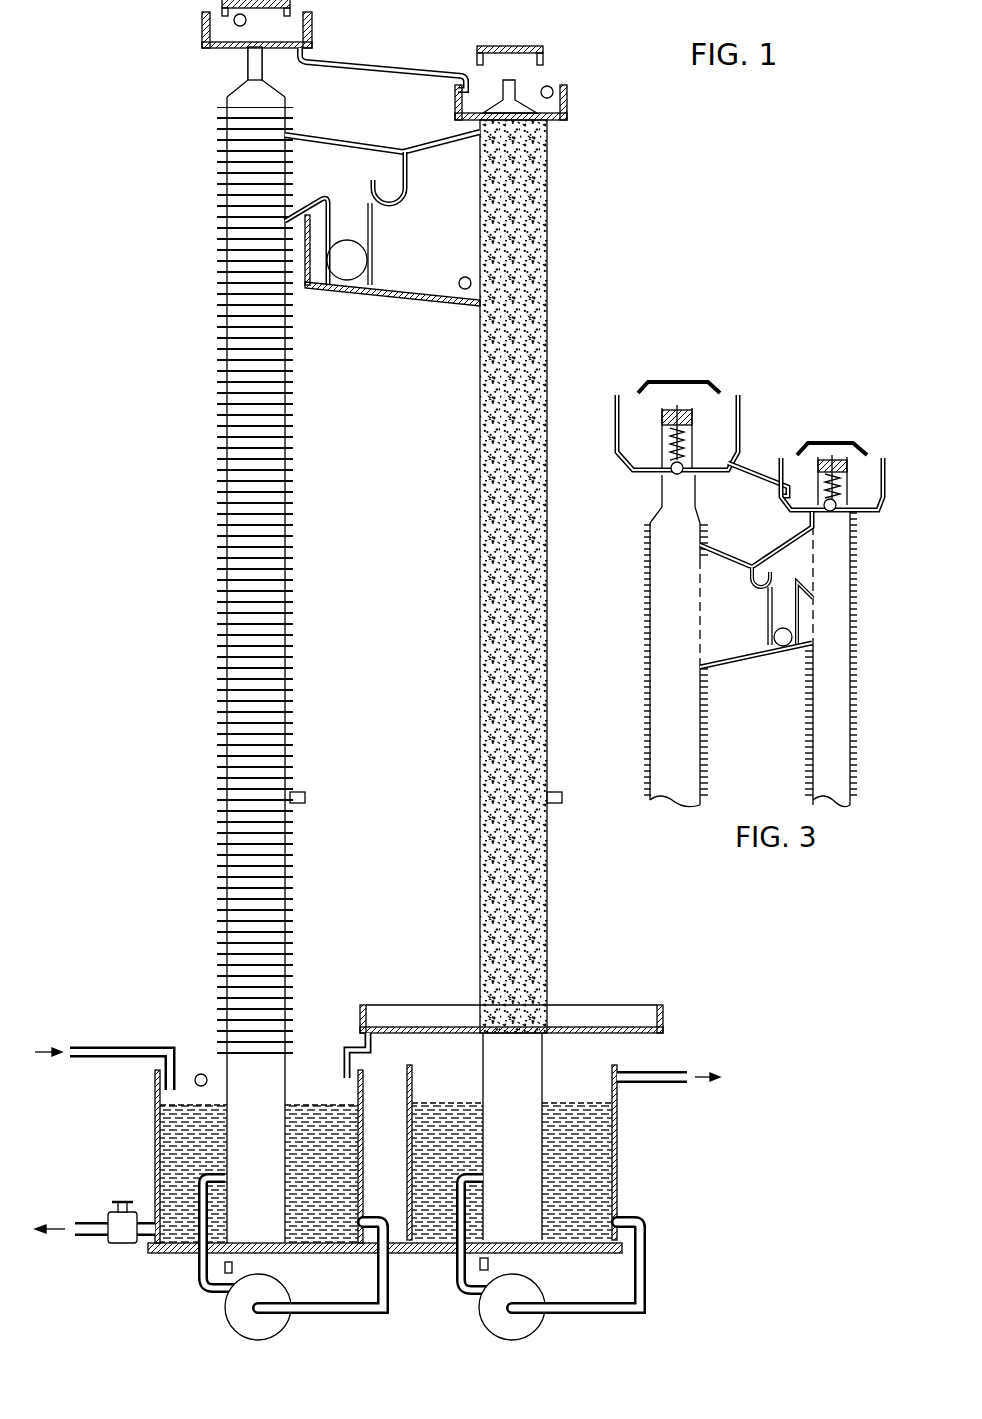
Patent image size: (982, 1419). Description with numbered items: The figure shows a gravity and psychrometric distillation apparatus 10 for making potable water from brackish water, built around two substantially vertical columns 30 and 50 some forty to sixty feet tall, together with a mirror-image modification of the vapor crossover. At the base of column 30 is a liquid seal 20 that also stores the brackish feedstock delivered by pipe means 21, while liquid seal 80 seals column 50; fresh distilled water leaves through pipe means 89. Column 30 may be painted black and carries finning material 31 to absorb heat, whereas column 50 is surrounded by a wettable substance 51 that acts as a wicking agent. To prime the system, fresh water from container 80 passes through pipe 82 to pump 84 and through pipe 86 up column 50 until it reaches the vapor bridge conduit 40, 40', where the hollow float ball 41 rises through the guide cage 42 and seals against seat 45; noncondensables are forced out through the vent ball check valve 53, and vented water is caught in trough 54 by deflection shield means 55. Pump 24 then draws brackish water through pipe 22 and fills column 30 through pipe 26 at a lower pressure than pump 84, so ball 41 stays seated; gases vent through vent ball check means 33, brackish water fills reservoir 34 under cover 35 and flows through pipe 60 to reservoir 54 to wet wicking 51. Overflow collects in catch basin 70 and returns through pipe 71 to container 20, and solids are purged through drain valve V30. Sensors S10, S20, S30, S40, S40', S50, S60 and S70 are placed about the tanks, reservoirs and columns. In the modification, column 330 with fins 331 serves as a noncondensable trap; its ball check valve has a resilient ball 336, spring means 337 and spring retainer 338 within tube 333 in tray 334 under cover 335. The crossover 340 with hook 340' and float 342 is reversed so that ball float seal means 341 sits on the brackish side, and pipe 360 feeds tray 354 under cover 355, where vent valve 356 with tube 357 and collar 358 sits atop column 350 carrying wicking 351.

In FIG. 1, the apparatus 10 is at (566, 878).
In FIG. 1, the liquid seal 20 is at (335, 1099).
In FIG. 1, the pipe means 21 is at (78, 1048).
In FIG. 1, the pipe 22 is at (385, 1304).
In FIG. 1, the second pump means 24 is at (226, 1304).
In FIG. 1, the pipe 26 is at (200, 1274).
In FIG. 1, the vertical column 30 is at (233, 645).
In FIG. 1, the finning material 31 is at (222, 426).
In FIG. 1, the vent ball check means 33 is at (248, 70).
In FIG. 1, the reservoir 34 is at (312, 33).
In FIG. 1, the tray cover 35 is at (292, 3).
In FIG. 1, the vapor bridge conduit 40 is at (382, 237).
In FIG. 1, the vapor bridge conduit 40' is at (383, 218).
In FIG. 1, the caged ball check valve 41 is at (352, 275).
In FIG. 1, the guide cage 42 is at (316, 275).
In FIG. 1, the seat 45 is at (338, 192).
In FIG. 1, the vertical column 50 is at (490, 680).
In FIG. 1, the wettable substance 51 is at (480, 427).
In FIG. 1, the ball check valve 53 is at (525, 80).
In FIG. 1, the trough 54 is at (567, 115).
In FIG. 1, the deflection shield means 55 is at (500, 45).
In FIG. 1, the pipe 60 is at (366, 62).
In FIG. 1, the catch basin 70 is at (612, 1020).
In FIG. 1, the pipe 71 is at (347, 1052).
In FIG. 1, the liquid seal 80 is at (595, 1094).
In FIG. 1, the pipe 82 is at (642, 1304).
In FIG. 1, the pump means 84 is at (480, 1304).
In FIG. 1, the pipe 86 is at (458, 1274).
In FIG. 1, the pipe means 89 is at (660, 1072).
In FIG. 1, the sensor S10 is at (488, 1262).
In FIG. 1, the sensor S20 is at (232, 1266).
In FIG. 1, the sensor S30 is at (198, 1074).
In FIG. 1, the sensor S40 is at (199, 13).
In FIG. 1, the sensor S40' is at (579, 88).
In FIG. 1, the sensor S50 is at (463, 292).
In FIG. 1, the sensor S60 is at (305, 797).
In FIG. 1, the sensor S70 is at (562, 797).
In FIG. 1, the drain valve V30 is at (124, 1245).
In FIG. 3, the vertical column 330 is at (660, 641).
In FIG. 3, the column fins 331 is at (650, 735).
In FIG. 3, the valve tube 333 is at (662, 441).
In FIG. 3, the upper tray 334 is at (740, 422).
In FIG. 3, the tray cover 335 is at (682, 382).
In FIG. 3, the resilient ball 336 is at (683, 472).
In FIG. 3, the spring means 337 is at (684, 440).
In FIG. 3, the spring retainer 338 is at (668, 418).
In FIG. 3, the intermediate tank 340 is at (758, 594).
In FIG. 3, the distilled side 340' is at (784, 598).
In FIG. 3, the ball float seal means 341 is at (790, 652).
In FIG. 3, the float ball 342 is at (774, 640).
In FIG. 3, the vertical column 350 is at (814, 659).
In FIG. 3, the wicking 351 is at (810, 735).
In FIG. 3, the second upper tray 354 is at (790, 510).
In FIG. 3, the tray cover 355 is at (822, 443).
In FIG. 3, the vent valve 356 is at (836, 510).
In FIG. 3, the valve tube 357 is at (848, 480).
In FIG. 3, the collar 358 is at (846, 466).
In FIG. 3, the transfer pipe 360 is at (743, 465).